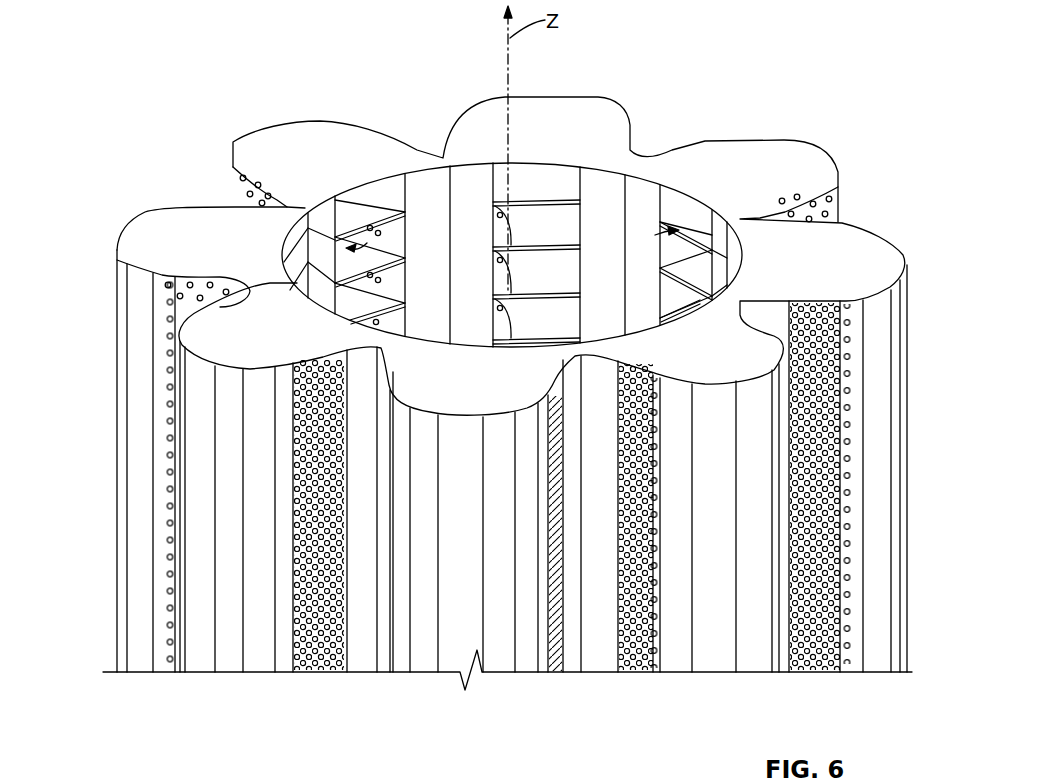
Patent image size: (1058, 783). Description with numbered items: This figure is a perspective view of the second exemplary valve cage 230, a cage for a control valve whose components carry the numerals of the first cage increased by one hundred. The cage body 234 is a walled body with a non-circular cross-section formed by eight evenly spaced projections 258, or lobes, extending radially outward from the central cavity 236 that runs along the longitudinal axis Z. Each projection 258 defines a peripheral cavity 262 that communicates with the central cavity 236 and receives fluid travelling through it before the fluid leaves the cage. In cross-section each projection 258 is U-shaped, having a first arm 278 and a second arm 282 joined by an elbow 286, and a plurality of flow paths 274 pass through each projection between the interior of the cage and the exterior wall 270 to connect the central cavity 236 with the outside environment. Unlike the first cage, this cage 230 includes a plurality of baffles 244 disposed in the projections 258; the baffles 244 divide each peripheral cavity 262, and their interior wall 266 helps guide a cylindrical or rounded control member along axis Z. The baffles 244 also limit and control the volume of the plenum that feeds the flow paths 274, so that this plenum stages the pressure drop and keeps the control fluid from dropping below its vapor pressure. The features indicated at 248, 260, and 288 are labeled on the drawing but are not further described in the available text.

The second exemplary valve cage 230 is at (178, 40).
The cage body 234 is at (148, 295).
The central cavity 236 is at (437, 255).
The baffles 244 is at (490, 212).
The lobe 248 is at (877, 270).
The projections 258 is at (256, 132).
The central baffles 260 is at (647, 220).
The peripheral cavities 262 is at (377, 242).
The interior wall of the baffles 266 is at (713, 220).
The exterior wall 270 is at (746, 657).
The flow paths 274 is at (313, 537).
The first arm 278 is at (526, 661).
The second arm 282 is at (397, 653).
The elbow 286 is at (443, 647).
The flow direction arrow 288 is at (667, 230).